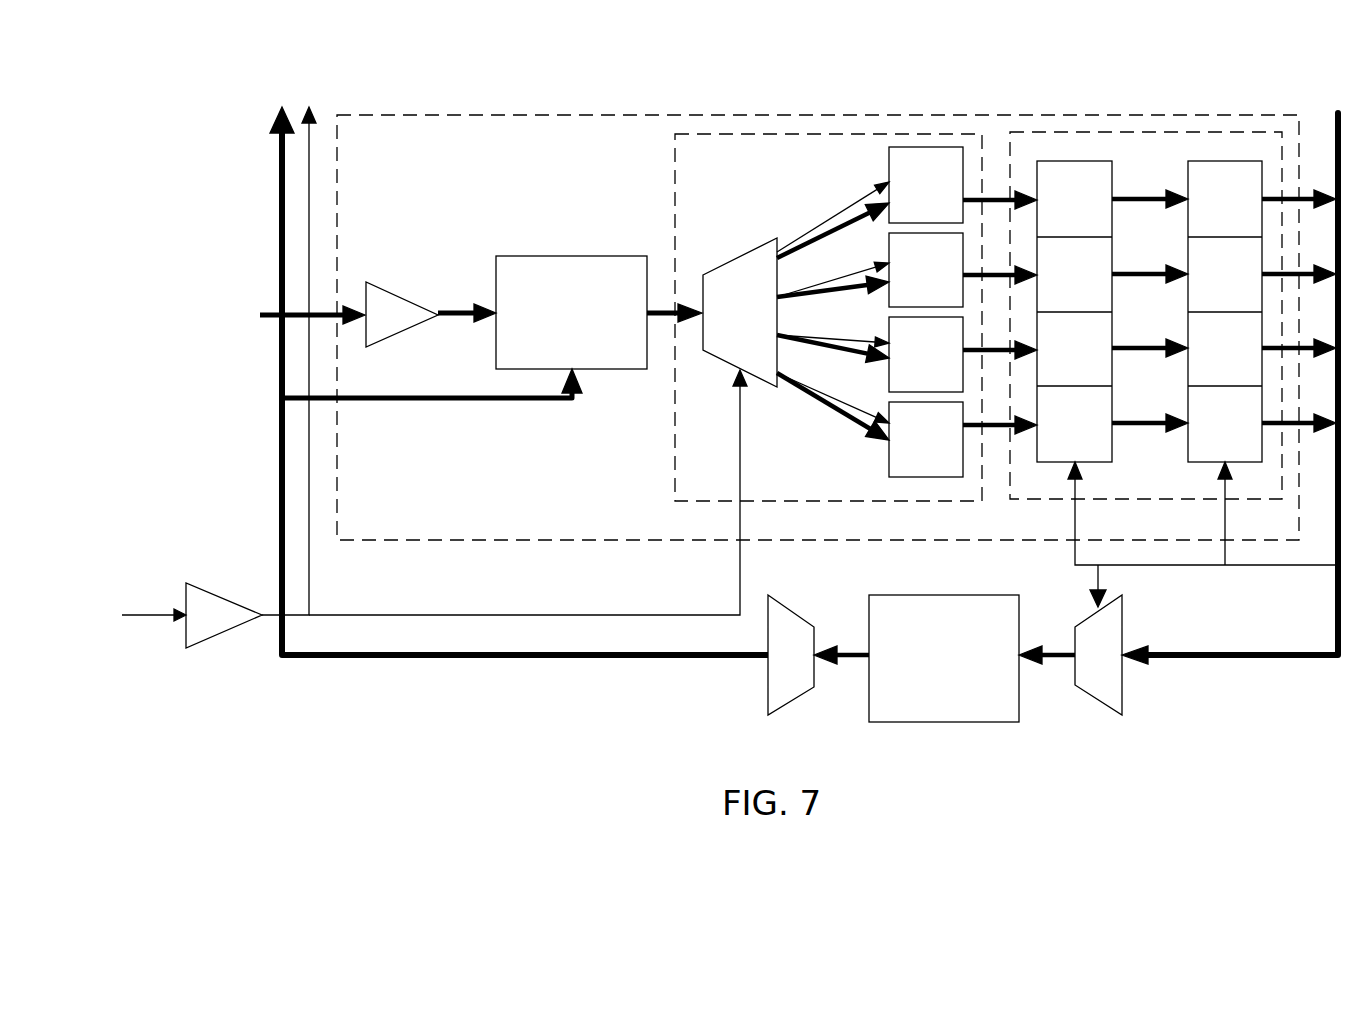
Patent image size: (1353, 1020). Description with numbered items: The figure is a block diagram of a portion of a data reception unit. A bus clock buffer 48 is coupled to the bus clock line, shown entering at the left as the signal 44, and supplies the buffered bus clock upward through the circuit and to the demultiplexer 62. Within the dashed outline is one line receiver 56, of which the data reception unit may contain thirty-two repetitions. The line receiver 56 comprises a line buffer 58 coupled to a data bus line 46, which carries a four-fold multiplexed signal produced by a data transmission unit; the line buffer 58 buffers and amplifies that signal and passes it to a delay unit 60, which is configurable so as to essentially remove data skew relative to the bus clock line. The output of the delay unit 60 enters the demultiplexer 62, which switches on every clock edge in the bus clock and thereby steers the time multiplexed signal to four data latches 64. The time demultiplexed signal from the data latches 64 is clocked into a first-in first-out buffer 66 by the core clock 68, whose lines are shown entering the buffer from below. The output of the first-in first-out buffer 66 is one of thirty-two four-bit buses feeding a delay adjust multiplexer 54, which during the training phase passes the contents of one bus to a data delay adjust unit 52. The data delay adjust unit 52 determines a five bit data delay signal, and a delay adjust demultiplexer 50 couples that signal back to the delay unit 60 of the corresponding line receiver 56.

The clock input signal 44 is at (154, 631).
The data bus line 46 is at (293, 315).
The bus clock buffer 48 is at (197, 627).
The delay adjust demultiplexer 50 is at (775, 669).
The data delay adjust unit 52 is at (930, 714).
The delay adjust multiplexer 54 is at (1083, 669).
The line receiver 56 is at (343, 533).
The line buffer 58 is at (370, 328).
The delay unit 60 is at (556, 365).
The demultiplexer 62 is at (723, 327).
The data latches 64 is at (911, 200).
The first-in first-out buffer 66 is at (1130, 494).
The core clock 68 is at (1280, 566).